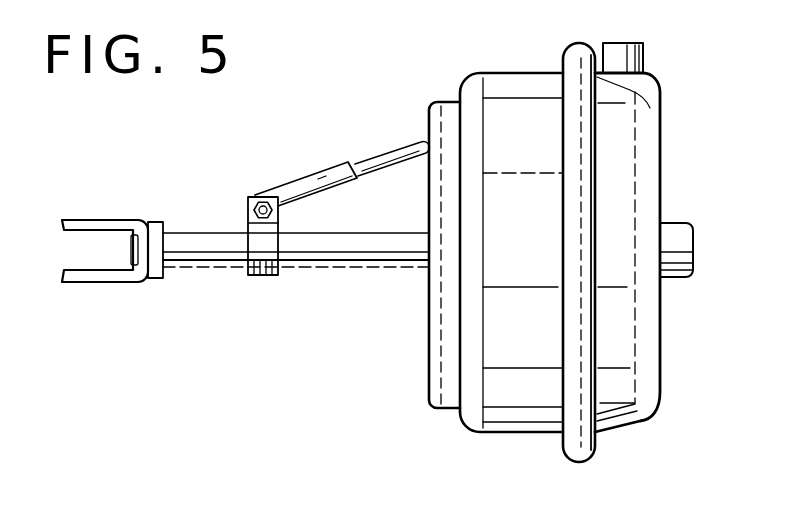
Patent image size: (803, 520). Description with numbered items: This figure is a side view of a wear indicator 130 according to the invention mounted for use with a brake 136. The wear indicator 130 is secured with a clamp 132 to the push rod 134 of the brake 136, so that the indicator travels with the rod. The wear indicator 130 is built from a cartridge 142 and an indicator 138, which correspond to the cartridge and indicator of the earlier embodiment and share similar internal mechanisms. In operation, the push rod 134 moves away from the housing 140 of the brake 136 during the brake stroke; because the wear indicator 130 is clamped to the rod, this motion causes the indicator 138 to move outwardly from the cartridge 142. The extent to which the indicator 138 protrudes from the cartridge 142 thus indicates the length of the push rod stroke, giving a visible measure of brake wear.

The wear indicator 130 is at (248, 196).
The clamp 132 is at (265, 273).
The push rod 134 is at (345, 253).
The brake 136 is at (427, 340).
The indicator 138 is at (407, 143).
The housing 140 is at (495, 88).
The cartridge 142 is at (318, 162).